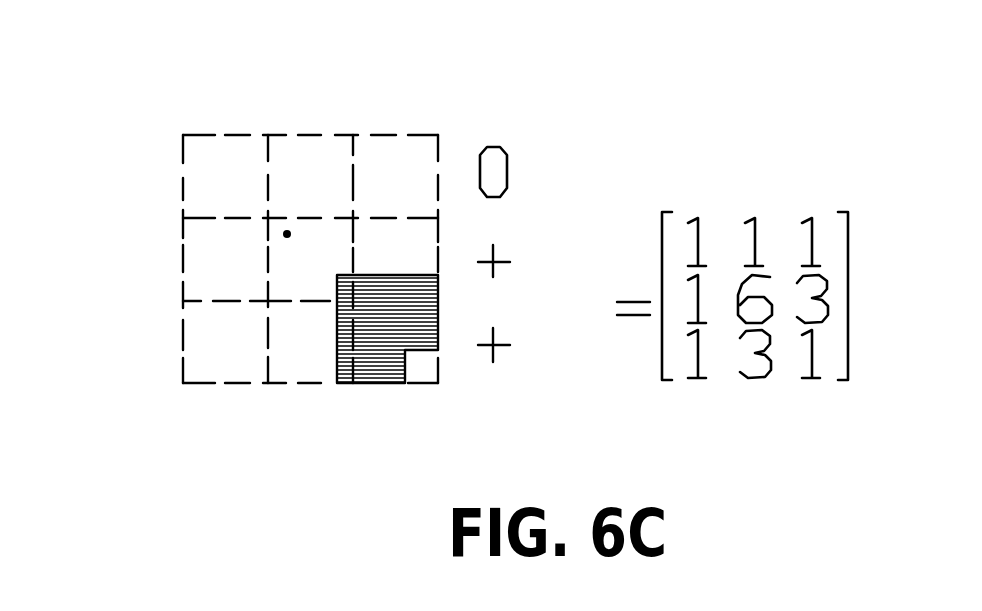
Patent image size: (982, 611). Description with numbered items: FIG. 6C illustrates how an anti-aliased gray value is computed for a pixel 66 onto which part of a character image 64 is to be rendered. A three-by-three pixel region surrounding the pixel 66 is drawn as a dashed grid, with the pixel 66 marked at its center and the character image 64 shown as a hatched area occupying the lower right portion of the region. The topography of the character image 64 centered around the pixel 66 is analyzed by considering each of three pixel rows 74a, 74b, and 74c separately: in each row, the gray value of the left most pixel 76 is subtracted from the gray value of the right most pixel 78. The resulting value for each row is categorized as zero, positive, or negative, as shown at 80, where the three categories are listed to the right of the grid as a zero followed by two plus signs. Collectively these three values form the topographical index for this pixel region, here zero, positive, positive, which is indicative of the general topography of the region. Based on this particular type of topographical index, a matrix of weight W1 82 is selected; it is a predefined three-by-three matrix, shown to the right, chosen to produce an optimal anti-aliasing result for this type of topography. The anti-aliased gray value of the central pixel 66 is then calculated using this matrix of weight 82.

The character image 64 is at (392, 363).
The pixel 66 is at (287, 234).
The pixel row 74a is at (177, 167).
The pixel row 74b is at (177, 242).
The pixel row 74c is at (177, 327).
The left most pixel 76 is at (235, 117).
The right most pixel 78 is at (408, 117).
The categorized result value 80 is at (517, 107).
The matrix of weight W1 82 is at (583, 277).